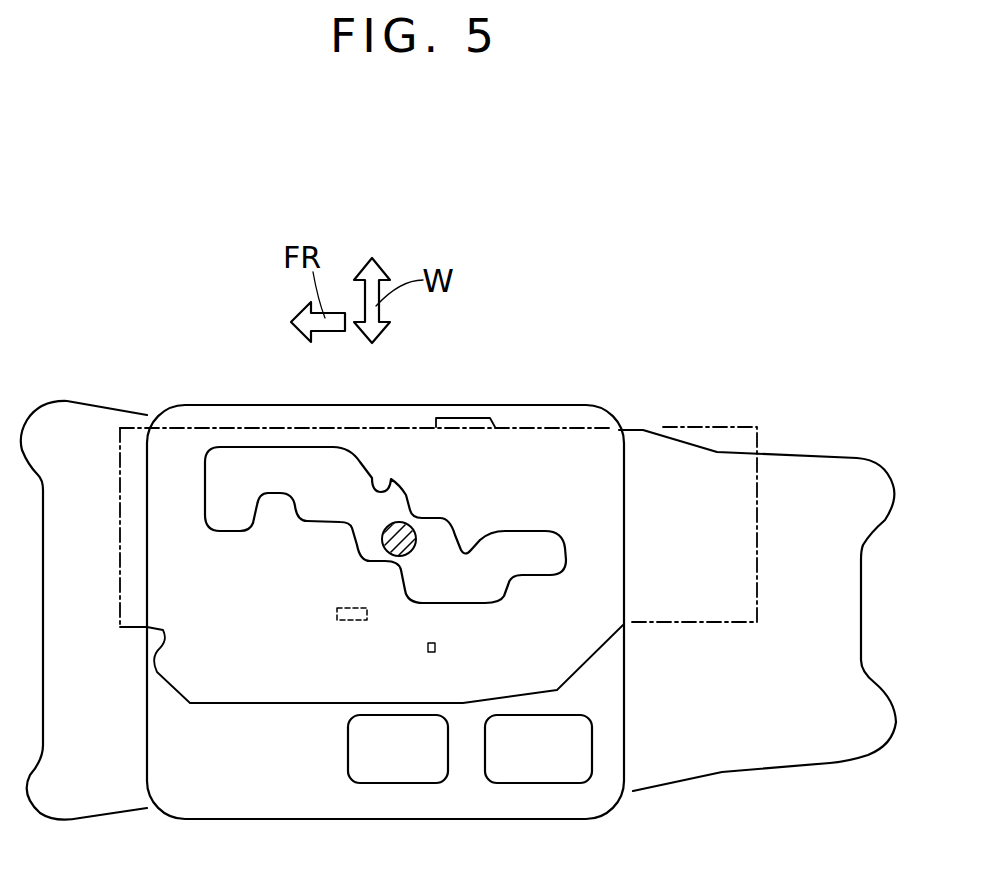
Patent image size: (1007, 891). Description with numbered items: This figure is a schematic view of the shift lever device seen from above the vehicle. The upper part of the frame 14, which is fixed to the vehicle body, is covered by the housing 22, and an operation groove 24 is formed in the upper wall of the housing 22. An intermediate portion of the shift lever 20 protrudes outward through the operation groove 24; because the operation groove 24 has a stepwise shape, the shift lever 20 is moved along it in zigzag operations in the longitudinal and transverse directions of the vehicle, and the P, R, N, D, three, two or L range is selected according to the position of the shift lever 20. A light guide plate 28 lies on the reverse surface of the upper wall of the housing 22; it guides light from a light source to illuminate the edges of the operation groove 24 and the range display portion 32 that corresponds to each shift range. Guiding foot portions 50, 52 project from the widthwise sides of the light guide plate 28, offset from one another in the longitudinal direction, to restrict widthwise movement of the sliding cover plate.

The frame 14 is at (832, 457).
The shift lever 20 is at (414, 534).
The housing 22 is at (565, 405).
The operation groove 24 is at (383, 476).
The light guide plate 28 is at (699, 426).
The range display portion 32 is at (307, 632).
The guiding foot portion 50 is at (360, 605).
The guiding foot portion 52 is at (490, 418).